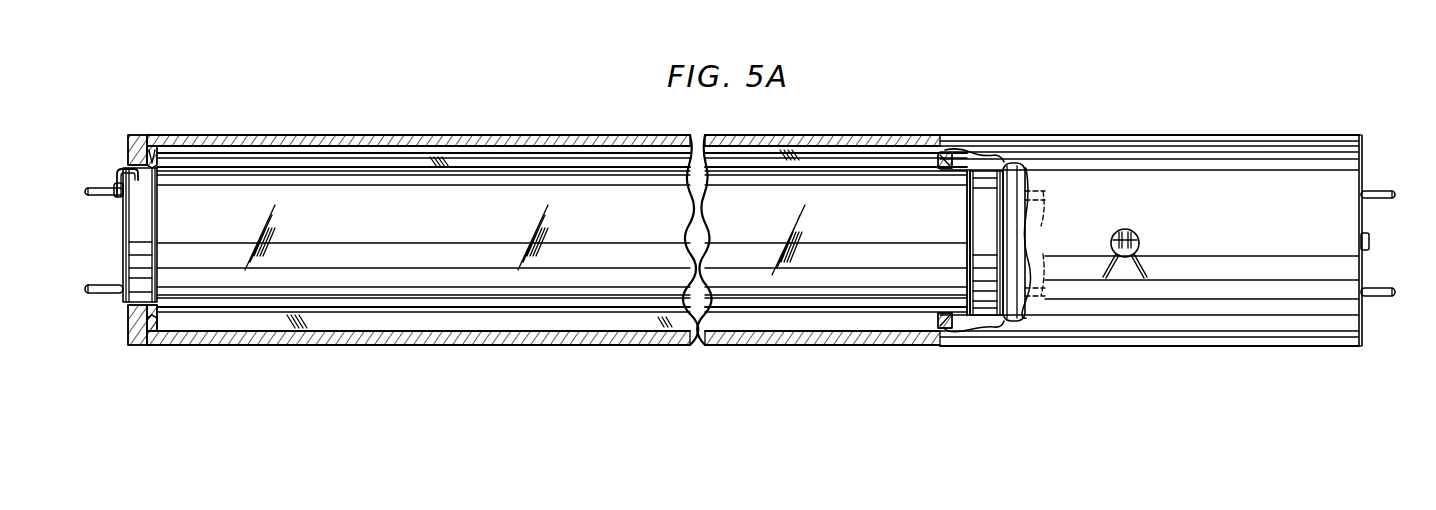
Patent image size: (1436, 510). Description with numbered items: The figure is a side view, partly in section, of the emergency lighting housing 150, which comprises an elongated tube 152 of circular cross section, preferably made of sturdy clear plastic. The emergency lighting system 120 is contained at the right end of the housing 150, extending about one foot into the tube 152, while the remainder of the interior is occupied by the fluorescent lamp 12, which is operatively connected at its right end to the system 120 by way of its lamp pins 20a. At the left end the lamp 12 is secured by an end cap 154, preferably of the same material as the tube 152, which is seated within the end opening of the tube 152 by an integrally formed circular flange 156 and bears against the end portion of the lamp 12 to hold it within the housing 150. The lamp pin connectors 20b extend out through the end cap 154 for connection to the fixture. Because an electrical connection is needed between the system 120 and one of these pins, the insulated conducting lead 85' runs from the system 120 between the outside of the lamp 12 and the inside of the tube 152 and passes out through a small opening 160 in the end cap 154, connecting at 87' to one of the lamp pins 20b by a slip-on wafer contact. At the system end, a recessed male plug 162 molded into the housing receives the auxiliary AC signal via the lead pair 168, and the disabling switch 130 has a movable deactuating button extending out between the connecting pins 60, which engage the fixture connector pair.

The elongated tube 152 is at (351, 133).
The insulated conducting lead 85' is at (562, 209).
The pre-heat fluorescent lamp 12 is at (560, 178).
The end cap 154 is at (140, 135).
The circular flange 156 is at (151, 168).
The lamp pin connectors 20b is at (88, 198).
The small opening 160 is at (129, 168).
The connection point 87' is at (85, 173).
The housing 150 is at (1097, 131).
The emergency lighting system 120 is at (1306, 160).
The lamp pins 20a is at (1015, 240).
The recessed male plug 162 is at (1128, 231).
The lead pair 168 is at (1134, 268).
The disabling switch 130 is at (1360, 239).
The pin pair 60 is at (1390, 288).